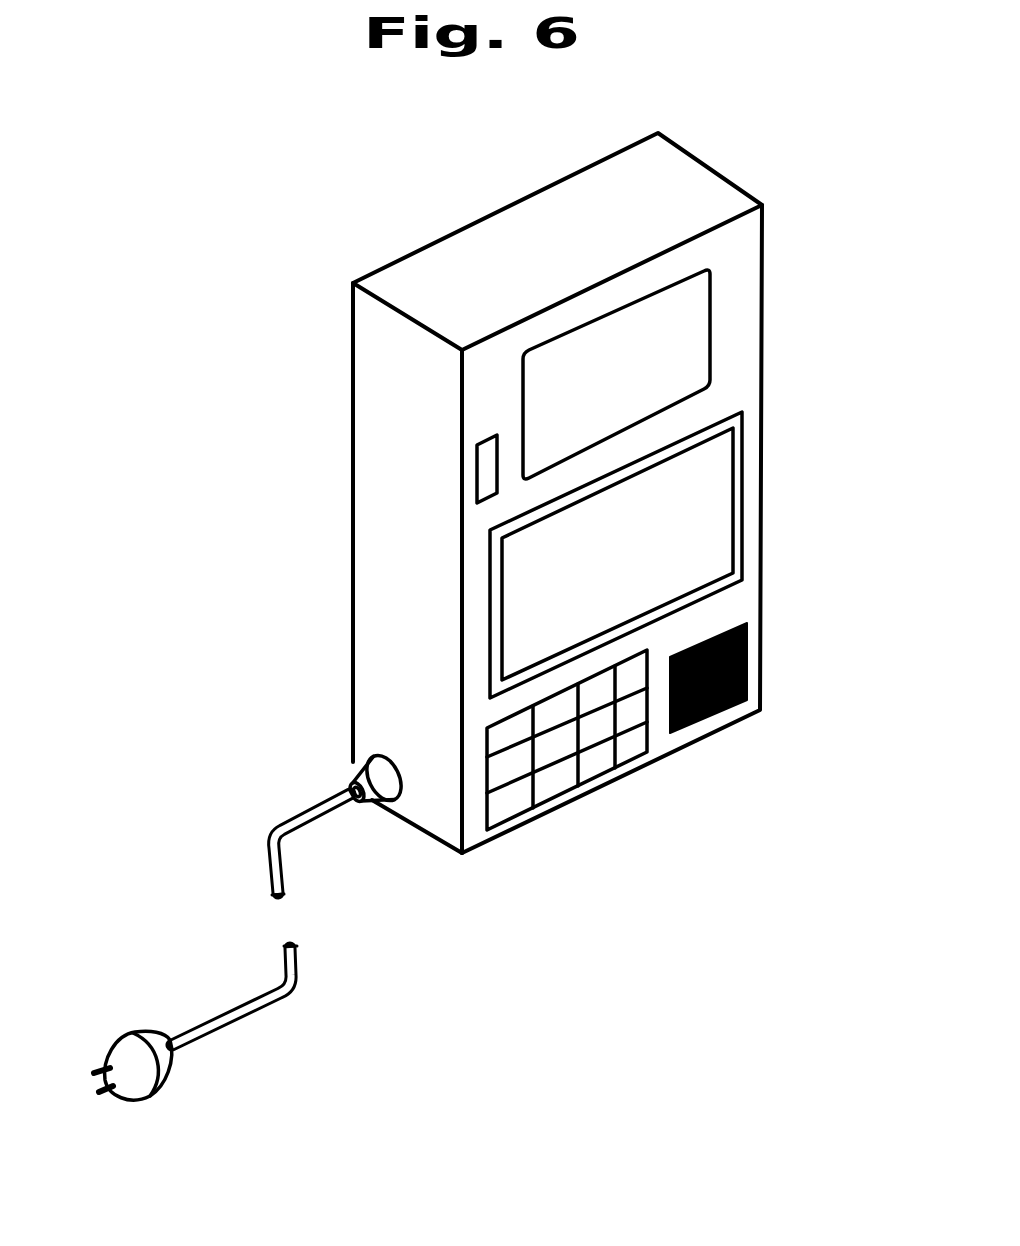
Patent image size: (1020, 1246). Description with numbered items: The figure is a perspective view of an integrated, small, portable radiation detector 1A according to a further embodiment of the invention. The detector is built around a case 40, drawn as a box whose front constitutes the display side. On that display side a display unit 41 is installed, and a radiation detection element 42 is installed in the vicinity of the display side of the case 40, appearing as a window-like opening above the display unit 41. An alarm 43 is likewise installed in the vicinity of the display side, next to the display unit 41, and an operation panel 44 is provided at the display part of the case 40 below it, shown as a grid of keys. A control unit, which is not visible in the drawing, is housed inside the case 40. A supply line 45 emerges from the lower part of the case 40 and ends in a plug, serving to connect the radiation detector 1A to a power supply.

The radiation detector 1A is at (278, 315).
The case 40 is at (385, 580).
The display unit 41 is at (717, 505).
The radiation detection element 42 is at (713, 313).
The alarm 43 is at (748, 663).
The operation panel 44 is at (557, 800).
The supply line 45 is at (263, 1010).